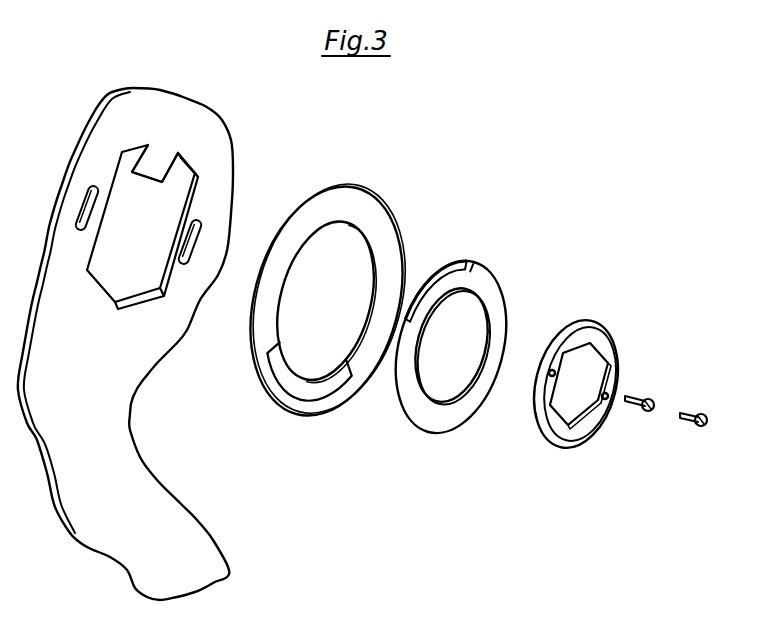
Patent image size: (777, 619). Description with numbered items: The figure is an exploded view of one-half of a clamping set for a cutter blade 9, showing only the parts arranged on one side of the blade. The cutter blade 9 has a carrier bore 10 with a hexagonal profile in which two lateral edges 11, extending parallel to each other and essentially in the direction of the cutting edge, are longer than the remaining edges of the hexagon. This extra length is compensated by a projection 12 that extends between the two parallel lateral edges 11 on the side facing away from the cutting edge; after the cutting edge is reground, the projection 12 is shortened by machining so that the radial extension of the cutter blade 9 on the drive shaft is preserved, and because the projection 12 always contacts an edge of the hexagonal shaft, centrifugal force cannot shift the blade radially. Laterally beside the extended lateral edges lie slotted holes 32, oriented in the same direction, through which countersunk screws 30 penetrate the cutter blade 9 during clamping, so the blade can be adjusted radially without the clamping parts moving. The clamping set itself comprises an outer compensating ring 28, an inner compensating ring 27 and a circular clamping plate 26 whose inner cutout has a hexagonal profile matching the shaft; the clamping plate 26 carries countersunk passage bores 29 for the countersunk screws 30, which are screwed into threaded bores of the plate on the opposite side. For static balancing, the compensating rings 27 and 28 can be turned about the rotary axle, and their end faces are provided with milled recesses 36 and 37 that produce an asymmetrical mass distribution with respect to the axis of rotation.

The cutter blade 9 is at (115, 397).
The carrier bore 10 is at (113, 272).
The lateral edges 11 is at (107, 210).
The projection 12 is at (155, 180).
The slotted holes 32 is at (88, 185).
The outer compensating ring 28 is at (367, 367).
The milled recess 37 is at (313, 400).
The inner compensating ring 27 is at (455, 417).
The milled recess 36 is at (458, 262).
The clamping plate 26 is at (577, 434).
The countersunk passage bores 29 is at (552, 368).
The countersunk screws 30 is at (650, 400).